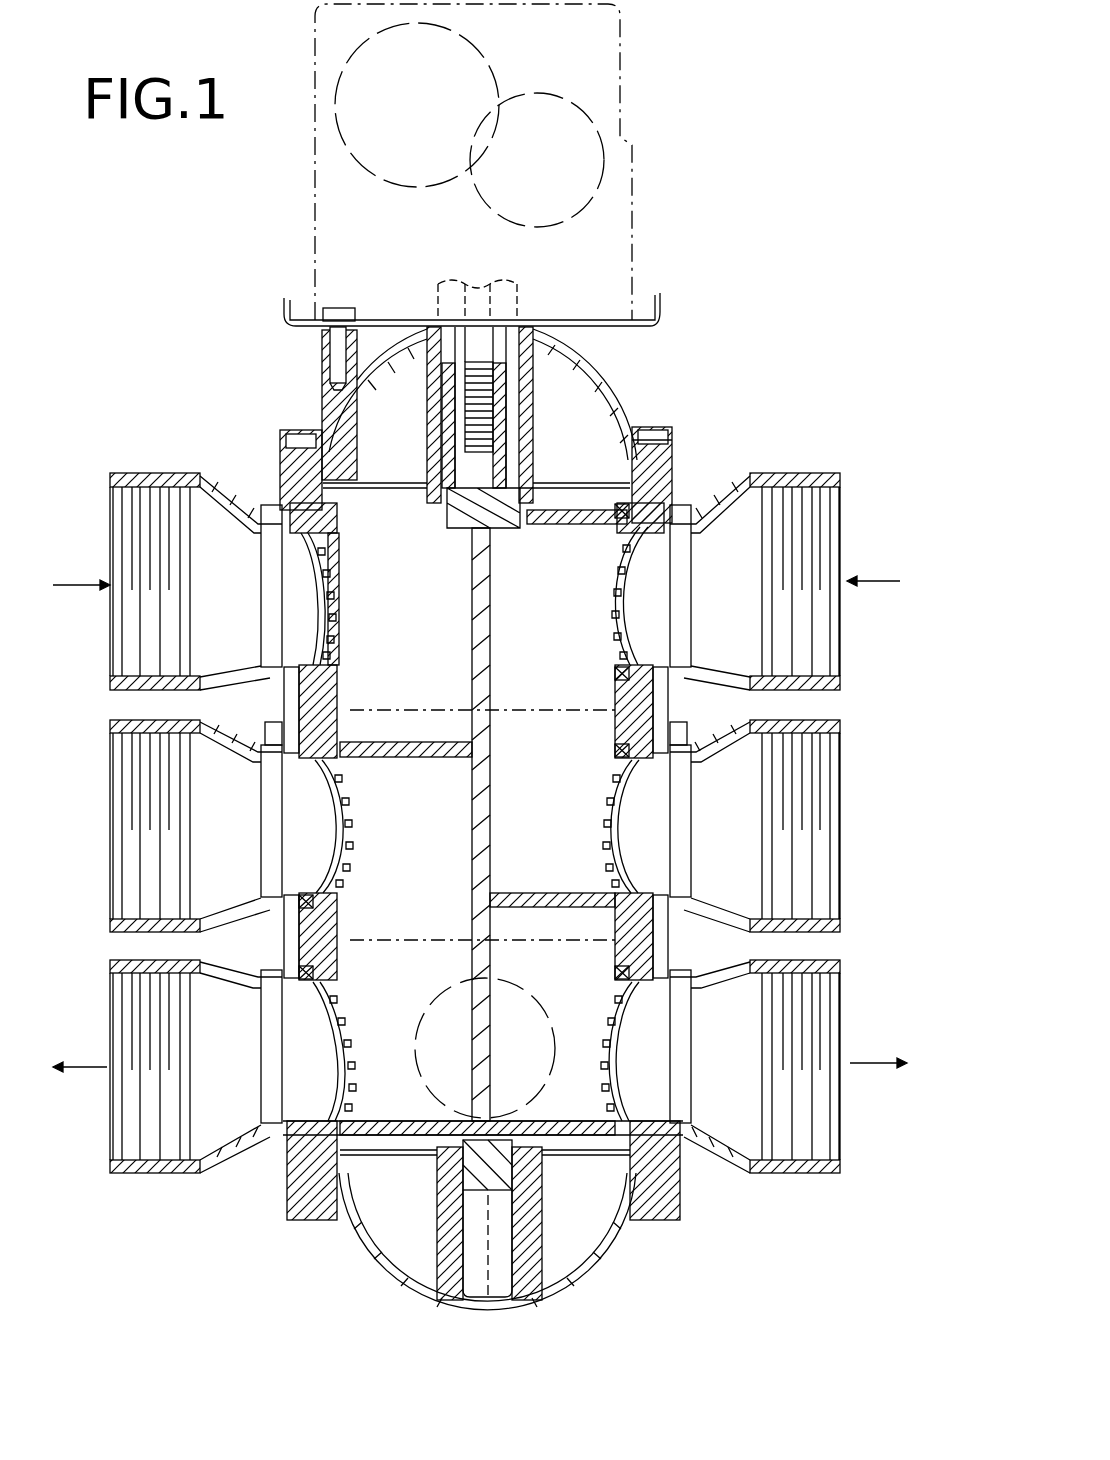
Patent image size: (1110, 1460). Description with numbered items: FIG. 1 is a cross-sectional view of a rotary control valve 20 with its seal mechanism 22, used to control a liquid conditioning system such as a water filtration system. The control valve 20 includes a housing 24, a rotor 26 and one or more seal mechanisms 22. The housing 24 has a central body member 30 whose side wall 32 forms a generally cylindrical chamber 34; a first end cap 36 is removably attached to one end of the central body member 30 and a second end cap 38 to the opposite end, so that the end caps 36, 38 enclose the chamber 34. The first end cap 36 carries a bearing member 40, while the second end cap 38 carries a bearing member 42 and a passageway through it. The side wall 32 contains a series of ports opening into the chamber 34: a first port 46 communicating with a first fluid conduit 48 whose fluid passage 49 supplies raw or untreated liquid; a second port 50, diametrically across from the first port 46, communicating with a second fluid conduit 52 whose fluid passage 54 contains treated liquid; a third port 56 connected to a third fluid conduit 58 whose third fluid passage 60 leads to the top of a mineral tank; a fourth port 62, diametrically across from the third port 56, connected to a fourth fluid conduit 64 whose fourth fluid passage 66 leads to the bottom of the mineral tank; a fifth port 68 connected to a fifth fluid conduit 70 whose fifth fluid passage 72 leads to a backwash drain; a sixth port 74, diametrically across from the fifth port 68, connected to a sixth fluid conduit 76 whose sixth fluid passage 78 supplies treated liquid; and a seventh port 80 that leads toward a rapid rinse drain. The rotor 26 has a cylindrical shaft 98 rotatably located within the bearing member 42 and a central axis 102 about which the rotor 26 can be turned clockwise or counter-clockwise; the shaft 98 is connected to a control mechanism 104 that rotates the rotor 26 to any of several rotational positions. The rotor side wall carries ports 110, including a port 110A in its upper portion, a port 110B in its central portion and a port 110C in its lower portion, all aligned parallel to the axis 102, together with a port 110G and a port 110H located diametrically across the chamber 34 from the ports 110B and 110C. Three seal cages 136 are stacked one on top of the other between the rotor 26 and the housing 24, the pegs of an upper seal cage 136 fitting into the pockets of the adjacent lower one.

The rotary control valve 20 is at (703, 415).
The seal mechanism 22 is at (340, 505).
The housing 24 is at (683, 448).
The rotor 26 is at (560, 527).
The central body member 30 is at (672, 487).
The side wall 32 is at (640, 613).
The chamber 34 is at (647, 627).
The first end cap 36 is at (603, 1262).
The second end cap 38 is at (598, 378).
The bearing member 40 is at (593, 1187).
The bearing member 42 is at (537, 467).
The first port 46 is at (293, 533).
The first fluid conduit 48 is at (155, 473).
The fluid passage 49 is at (203, 523).
The second port 50 is at (662, 530).
The second fluid conduit 52 is at (778, 481).
The fluid passage 54 is at (745, 507).
The third port 56 is at (293, 753).
The third fluid conduit 58 is at (117, 717).
The third fluid passage 60 is at (210, 763).
The fourth port 62 is at (660, 760).
The fourth fluid conduit 64 is at (757, 717).
The fourth fluid passage 66 is at (737, 757).
The fifth port 68 is at (293, 990).
The fifth fluid conduit 70 is at (140, 953).
The fifth fluid passage 72 is at (228, 1123).
The sixth port 74 is at (667, 983).
The sixth fluid conduit 76 is at (803, 1170).
The sixth fluid passage 78 is at (750, 1127).
The seventh port 80 is at (587, 1003).
The cylindrical shaft 98 is at (497, 405).
The central axis 102 is at (530, 1263).
The control mechanism 104 is at (632, 240).
The rotor port 110 is at (473, 1183).
The port 110A is at (627, 668).
The port 110B is at (627, 750).
The port 110C is at (627, 977).
The port 110G is at (333, 900).
The port 110H is at (333, 980).
The seal cage 136 is at (327, 700).